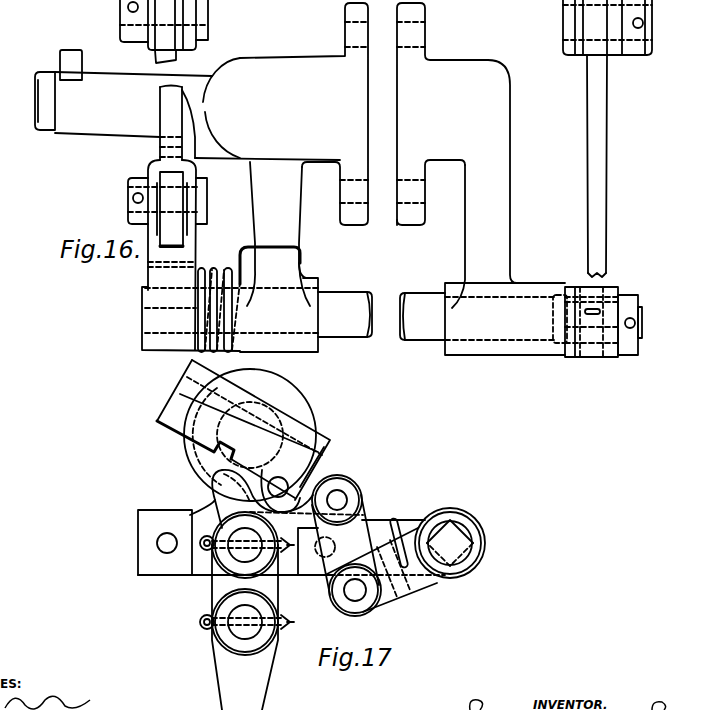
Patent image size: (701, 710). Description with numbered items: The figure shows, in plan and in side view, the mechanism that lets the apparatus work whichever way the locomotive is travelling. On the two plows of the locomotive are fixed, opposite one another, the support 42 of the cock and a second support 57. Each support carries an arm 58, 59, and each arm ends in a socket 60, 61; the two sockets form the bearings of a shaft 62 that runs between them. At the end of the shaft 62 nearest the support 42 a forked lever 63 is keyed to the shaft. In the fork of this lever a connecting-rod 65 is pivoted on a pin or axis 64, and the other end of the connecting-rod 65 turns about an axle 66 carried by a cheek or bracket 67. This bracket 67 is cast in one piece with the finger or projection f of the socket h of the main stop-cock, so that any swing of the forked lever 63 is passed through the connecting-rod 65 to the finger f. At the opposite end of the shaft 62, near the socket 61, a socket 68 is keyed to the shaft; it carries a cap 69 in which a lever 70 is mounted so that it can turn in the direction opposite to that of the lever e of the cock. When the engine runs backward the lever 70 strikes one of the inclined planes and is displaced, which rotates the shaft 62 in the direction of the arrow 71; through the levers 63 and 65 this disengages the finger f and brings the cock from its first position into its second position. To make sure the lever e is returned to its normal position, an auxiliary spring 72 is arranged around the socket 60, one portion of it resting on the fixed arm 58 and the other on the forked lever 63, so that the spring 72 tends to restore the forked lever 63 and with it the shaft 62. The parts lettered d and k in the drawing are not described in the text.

In FIG. 16, the support of the cock 42 is at (281, 114).
In FIG. 17, the support of the cock 42 is at (160, 578).
In FIG. 16, the support 57 is at (457, 143).
In FIG. 16, the arm 58 is at (278, 234).
In FIG. 16, the arm 59 is at (477, 236).
In FIG. 16, the socket 60 is at (305, 283).
In FIG. 17, the socket 60 is at (450, 561).
In FIG. 16, the socket 61 is at (506, 319).
In FIG. 16, the shaft 62 is at (381, 316).
In FIG. 17, the shaft 62 is at (450, 543).
In FIG. 16, the forked lever 63 is at (160, 278).
In FIG. 17, the forked lever 63 is at (381, 573).
In FIG. 17, the pin 64 is at (352, 594).
In FIG. 16, the connecting-rod 65 is at (176, 210).
In FIG. 17, the connecting-rod 65 is at (368, 545).
In FIG. 16, the axle 66 is at (128, 188).
In FIG. 17, the axle 66 is at (346, 496).
In FIG. 17, the cheek or bracket 67 is at (328, 468).
In FIG. 16, the socket 68 is at (593, 335).
In FIG. 16, the cap 69 is at (582, 24).
In FIG. 16, the lever 70 is at (602, 117).
In FIG. 17, the arrow 71 is at (470, 506).
In FIG. 16, the auxiliary spring 72 is at (201, 268).
In FIG. 17, the lever bar d is at (305, 458).
In FIG. 17, the lever of the cock e is at (245, 627).
In FIG. 17, the finger or projection f is at (300, 450).
In FIG. 17, the socket of the main stop-cock h is at (217, 583).
In FIG. 17, the pawl k is at (208, 478).